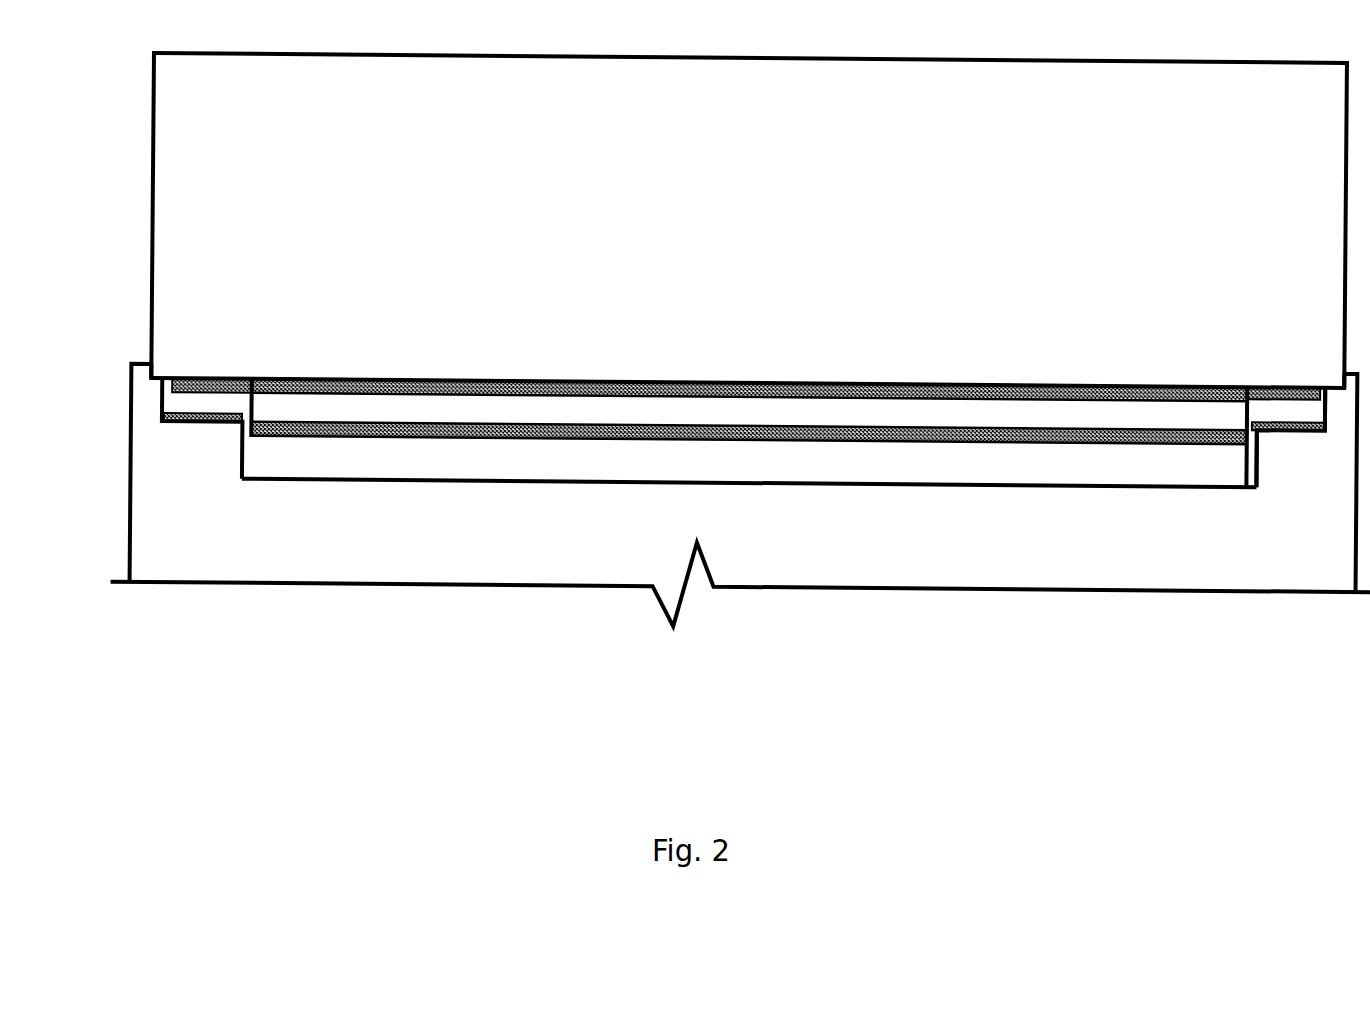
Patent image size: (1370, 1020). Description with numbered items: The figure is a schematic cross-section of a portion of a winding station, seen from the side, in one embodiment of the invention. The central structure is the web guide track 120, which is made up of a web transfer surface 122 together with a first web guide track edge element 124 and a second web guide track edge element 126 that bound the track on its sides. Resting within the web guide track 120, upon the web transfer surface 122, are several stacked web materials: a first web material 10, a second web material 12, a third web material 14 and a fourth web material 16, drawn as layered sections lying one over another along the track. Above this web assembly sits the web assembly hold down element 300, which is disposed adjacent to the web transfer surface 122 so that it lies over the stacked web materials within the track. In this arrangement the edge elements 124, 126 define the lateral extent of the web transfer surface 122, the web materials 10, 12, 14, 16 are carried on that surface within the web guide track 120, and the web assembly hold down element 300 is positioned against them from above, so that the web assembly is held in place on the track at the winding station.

The web assembly hold down element 300 is at (744, 196).
The web guide track 120 is at (680, 675).
The web transfer surface 122 is at (932, 487).
The first web guide track edge element 124 is at (1263, 467).
The second web guide track edge element 126 is at (1333, 413).
The second web material 12 is at (712, 423).
The first web material 10 is at (714, 469).
The third web material 14 is at (213, 423).
The fourth web material 16 is at (200, 389).